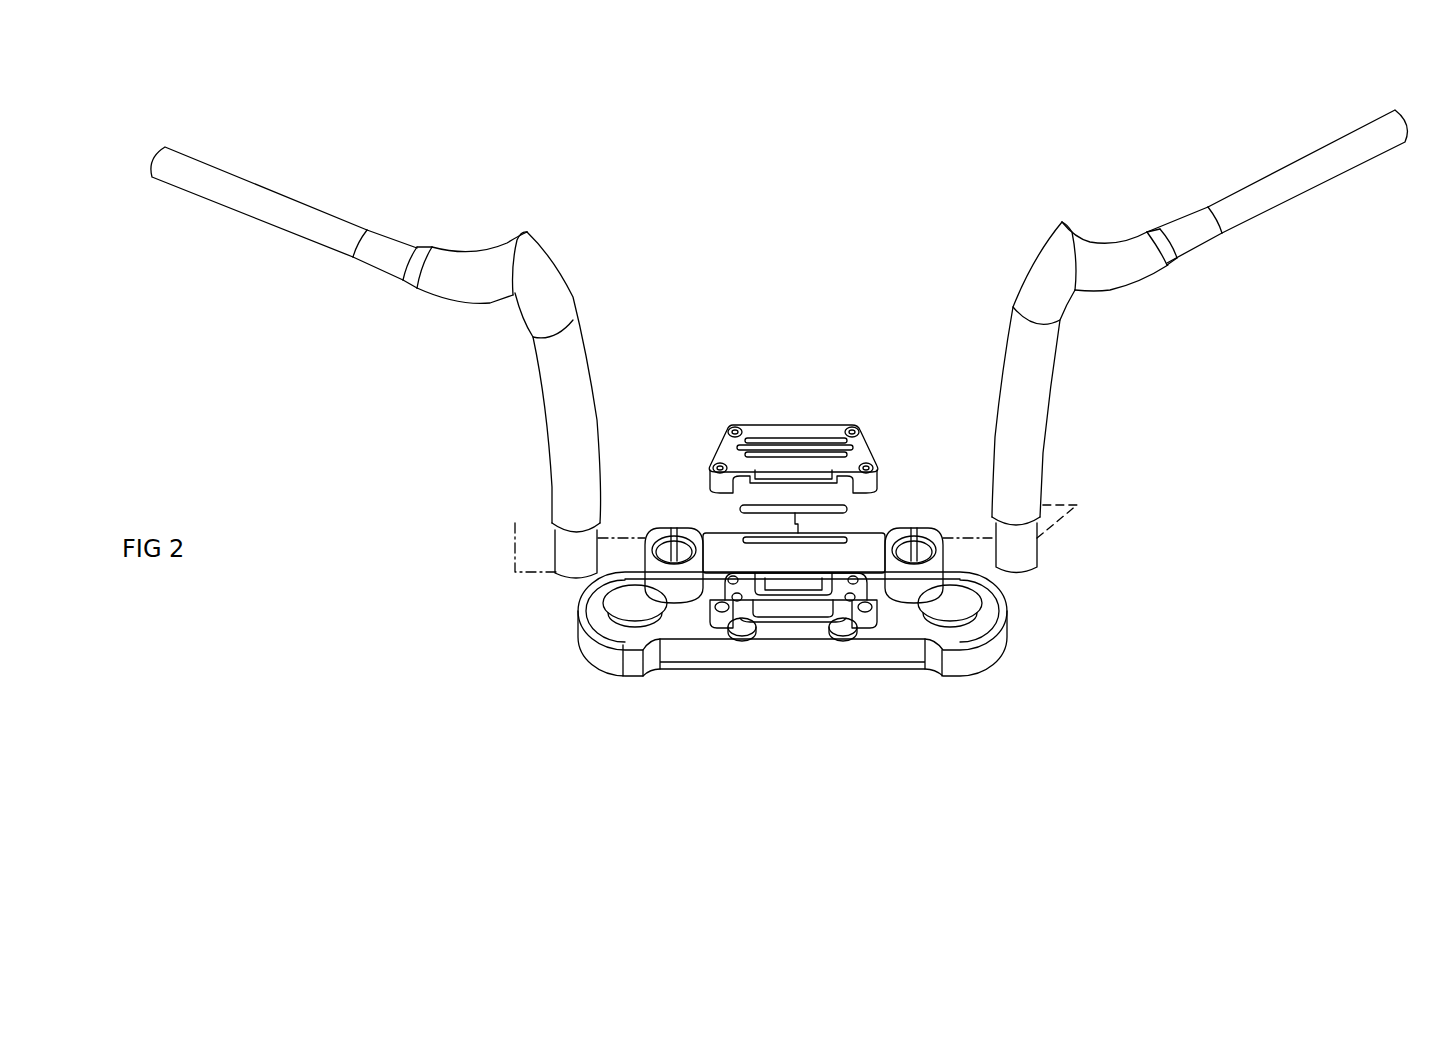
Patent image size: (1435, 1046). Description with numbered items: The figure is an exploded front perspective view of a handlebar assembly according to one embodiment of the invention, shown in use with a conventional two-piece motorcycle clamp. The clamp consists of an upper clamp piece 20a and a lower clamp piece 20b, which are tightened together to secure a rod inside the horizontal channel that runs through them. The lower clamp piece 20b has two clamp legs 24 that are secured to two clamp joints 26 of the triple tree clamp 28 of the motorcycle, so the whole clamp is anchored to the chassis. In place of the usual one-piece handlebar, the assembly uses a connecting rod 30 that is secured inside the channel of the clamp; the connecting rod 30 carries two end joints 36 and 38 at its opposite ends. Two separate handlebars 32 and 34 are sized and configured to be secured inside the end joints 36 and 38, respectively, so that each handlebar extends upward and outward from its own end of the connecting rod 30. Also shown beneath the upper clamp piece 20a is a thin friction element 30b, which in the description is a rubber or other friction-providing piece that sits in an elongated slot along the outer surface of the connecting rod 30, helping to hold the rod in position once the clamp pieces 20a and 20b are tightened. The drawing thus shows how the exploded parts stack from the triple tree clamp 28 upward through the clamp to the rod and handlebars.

The upper clamp piece 20a is at (800, 450).
The lower clamp piece 20b is at (794, 614).
The clamp legs 24 is at (850, 636).
The clamp joints 26 is at (733, 636).
The triple tree clamp 28 is at (607, 656).
The connecting rod 30 is at (866, 541).
The shim 30b is at (740, 507).
The handlebar 32 is at (1028, 427).
The handlebar 34 is at (573, 440).
The end joint 36 is at (913, 588).
The end joint 38 is at (657, 590).